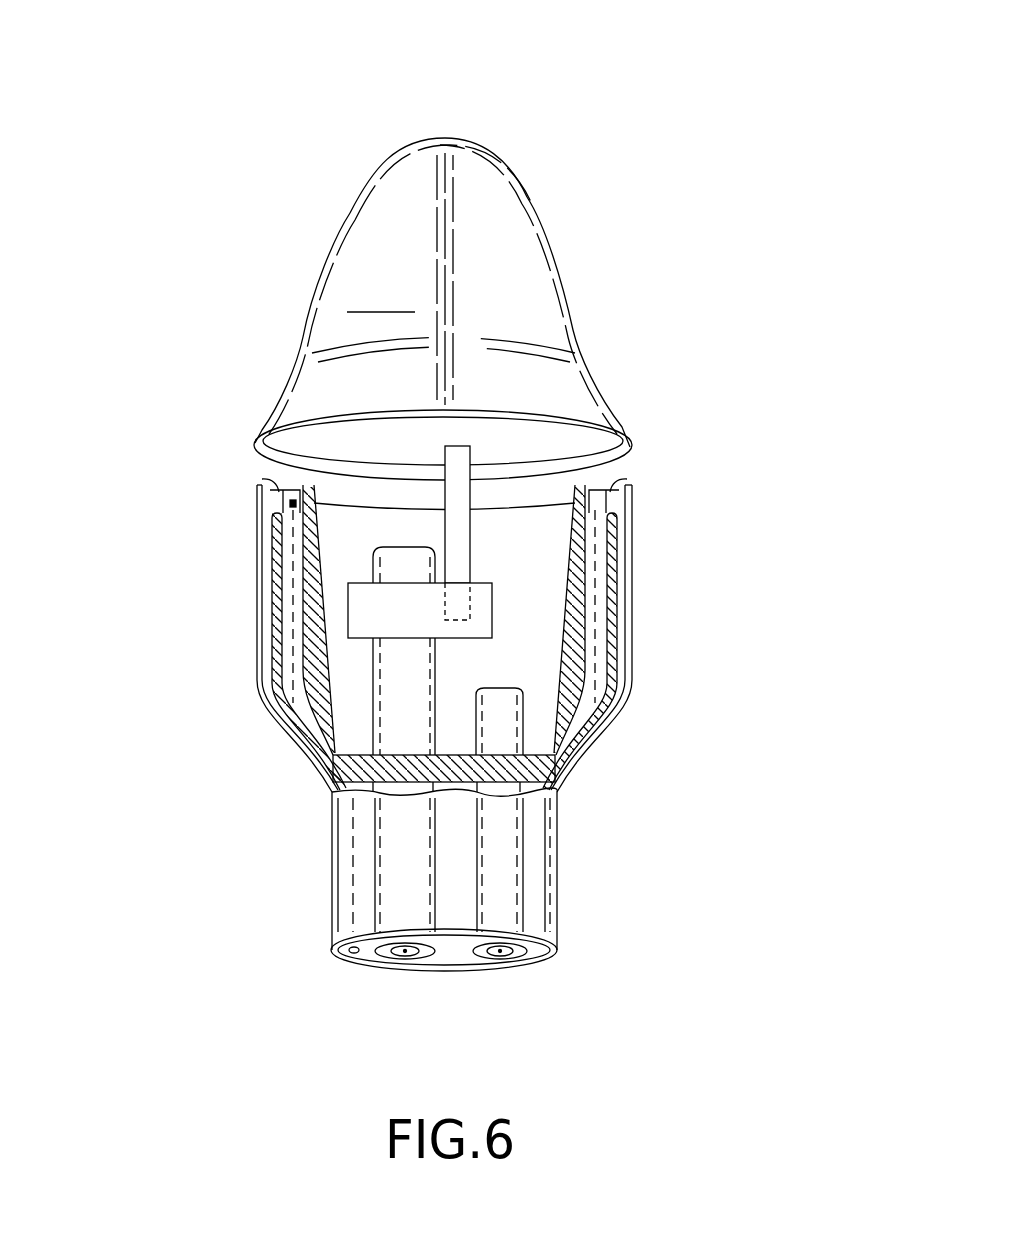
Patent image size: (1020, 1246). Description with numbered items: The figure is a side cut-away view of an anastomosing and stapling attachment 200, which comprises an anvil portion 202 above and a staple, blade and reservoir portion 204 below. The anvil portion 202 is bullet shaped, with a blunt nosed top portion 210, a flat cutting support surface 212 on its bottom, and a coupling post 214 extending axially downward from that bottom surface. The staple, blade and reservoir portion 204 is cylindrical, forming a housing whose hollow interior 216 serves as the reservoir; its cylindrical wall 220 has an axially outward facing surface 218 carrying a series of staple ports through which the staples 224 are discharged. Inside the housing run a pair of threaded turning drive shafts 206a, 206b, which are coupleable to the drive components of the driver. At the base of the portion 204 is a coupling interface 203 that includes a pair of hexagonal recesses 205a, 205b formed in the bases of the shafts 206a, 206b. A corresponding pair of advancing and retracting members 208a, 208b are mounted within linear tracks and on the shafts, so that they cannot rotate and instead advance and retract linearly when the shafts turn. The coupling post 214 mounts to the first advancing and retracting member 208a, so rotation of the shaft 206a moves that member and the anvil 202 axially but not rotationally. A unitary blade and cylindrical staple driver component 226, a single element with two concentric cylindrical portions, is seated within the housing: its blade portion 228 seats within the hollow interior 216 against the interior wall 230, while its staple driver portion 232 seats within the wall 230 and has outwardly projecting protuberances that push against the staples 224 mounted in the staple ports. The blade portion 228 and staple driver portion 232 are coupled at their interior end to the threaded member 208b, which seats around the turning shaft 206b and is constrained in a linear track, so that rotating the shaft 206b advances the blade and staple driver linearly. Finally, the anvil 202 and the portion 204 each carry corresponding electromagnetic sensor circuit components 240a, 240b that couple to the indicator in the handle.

The anastomosing and stapling attachment 200 is at (632, 274).
The anvil portion 202 is at (443, 248).
The coupling interface 203 is at (367, 955).
The staple, blade and reservoir (SBR) portion 204 is at (672, 753).
The hexagonal recess 205a is at (400, 953).
The hexagonal recess 205b is at (553, 950).
The turning drive shaft 206a is at (376, 697).
The turning drive shaft 206b is at (523, 690).
The first advancing and retracting member 208a is at (492, 612).
The threaded member 208b is at (553, 788).
The blunt nosed top portion 210 is at (442, 138).
The flat cutting support surface 212 is at (472, 476).
The coupling post 214 is at (471, 527).
The hollow interior 216 is at (530, 665).
The axially outward facing surface 218 is at (471, 512).
The cylindrical wall 220 is at (633, 580).
The staples 224 is at (283, 491).
The unitary blade and cylindrical staple driver component 226 is at (308, 740).
The blade portion 228 is at (310, 618).
The interior wall 230 is at (305, 668).
The staple driver portion 232 is at (276, 556).
The electromagnetic sensor circuit component 240a is at (290, 504).
The electromagnetic sensor circuit component 240b is at (277, 485).